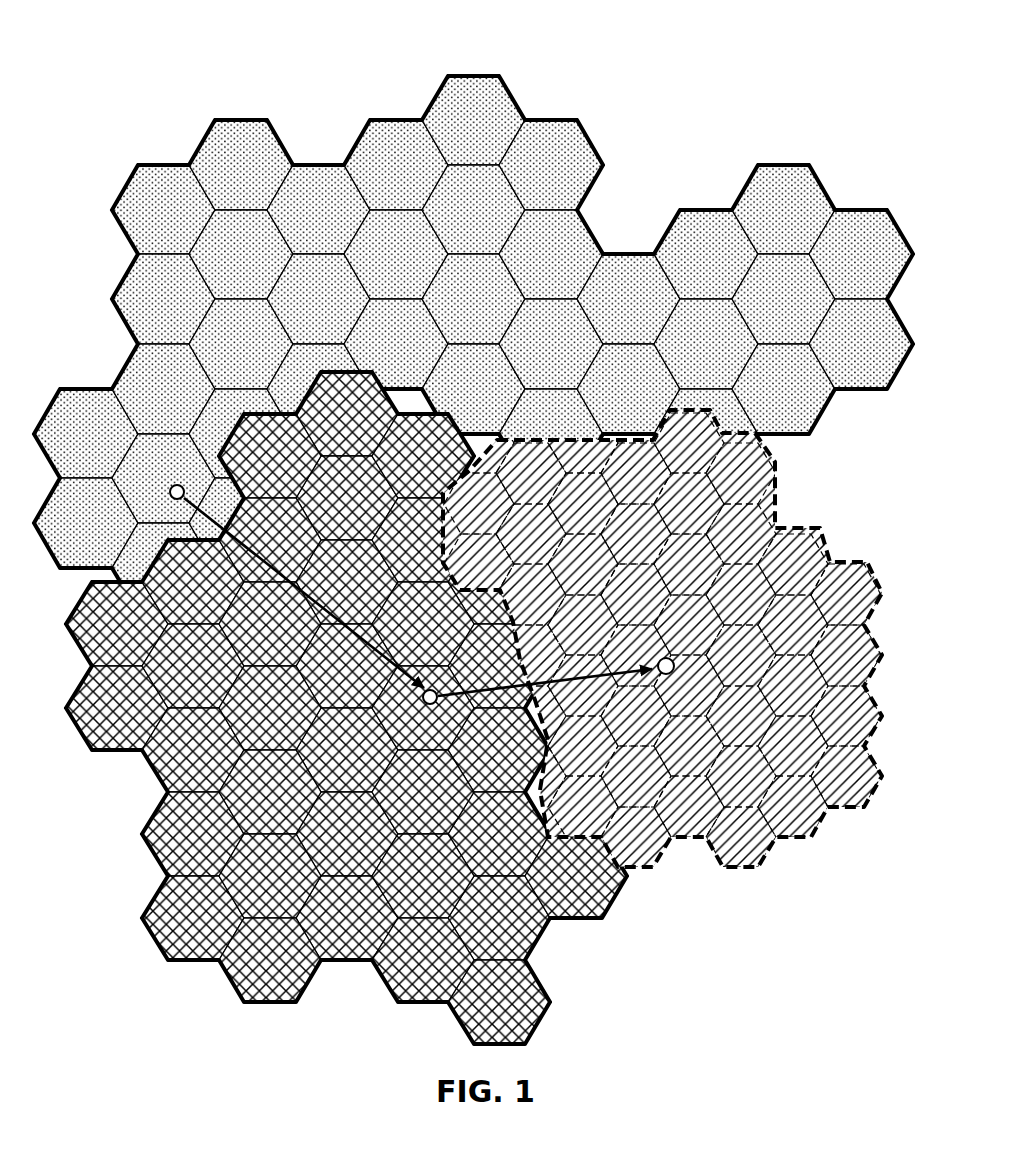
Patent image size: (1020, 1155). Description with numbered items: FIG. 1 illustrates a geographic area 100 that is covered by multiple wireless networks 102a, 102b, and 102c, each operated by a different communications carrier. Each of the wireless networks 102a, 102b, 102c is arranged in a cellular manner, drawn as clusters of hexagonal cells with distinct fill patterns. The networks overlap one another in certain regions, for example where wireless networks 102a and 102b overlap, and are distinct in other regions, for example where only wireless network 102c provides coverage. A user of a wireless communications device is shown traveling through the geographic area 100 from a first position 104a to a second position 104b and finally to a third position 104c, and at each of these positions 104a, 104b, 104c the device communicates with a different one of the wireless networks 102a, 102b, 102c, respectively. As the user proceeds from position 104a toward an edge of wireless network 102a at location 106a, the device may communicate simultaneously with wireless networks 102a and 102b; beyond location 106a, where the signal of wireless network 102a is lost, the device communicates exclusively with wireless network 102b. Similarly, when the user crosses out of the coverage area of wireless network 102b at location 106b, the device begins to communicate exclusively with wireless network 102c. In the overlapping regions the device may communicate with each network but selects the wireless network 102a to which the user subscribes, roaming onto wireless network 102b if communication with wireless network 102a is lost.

The geographic area 100 is at (332, 72).
The wireless network 102a is at (790, 160).
The wireless network 102b is at (178, 966).
The wireless network 102c is at (830, 822).
The first position 104a is at (177, 484).
The second position 104b is at (429, 706).
The third position 104c is at (672, 671).
The location at edge of wireless network 106a is at (268, 568).
The location at edge of coverage area 106b is at (560, 702).